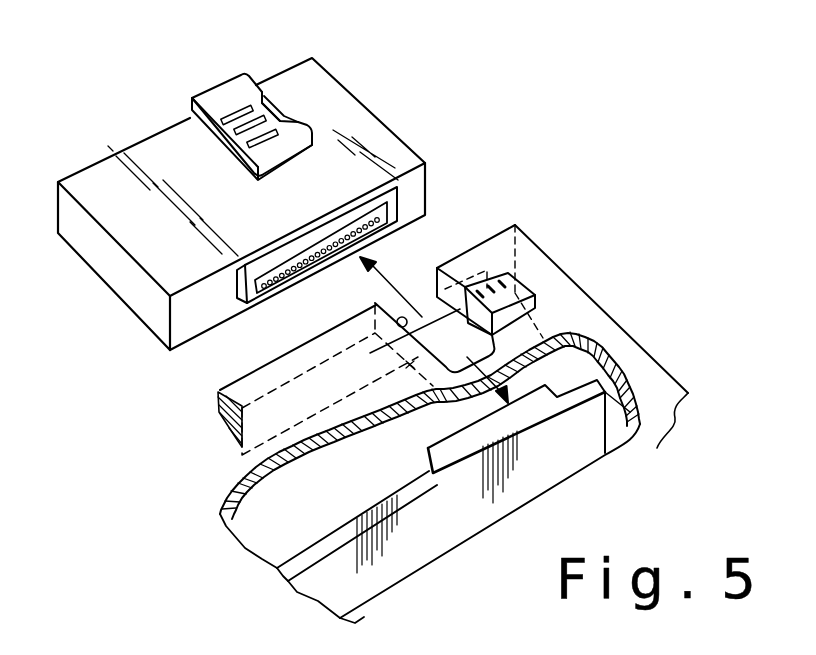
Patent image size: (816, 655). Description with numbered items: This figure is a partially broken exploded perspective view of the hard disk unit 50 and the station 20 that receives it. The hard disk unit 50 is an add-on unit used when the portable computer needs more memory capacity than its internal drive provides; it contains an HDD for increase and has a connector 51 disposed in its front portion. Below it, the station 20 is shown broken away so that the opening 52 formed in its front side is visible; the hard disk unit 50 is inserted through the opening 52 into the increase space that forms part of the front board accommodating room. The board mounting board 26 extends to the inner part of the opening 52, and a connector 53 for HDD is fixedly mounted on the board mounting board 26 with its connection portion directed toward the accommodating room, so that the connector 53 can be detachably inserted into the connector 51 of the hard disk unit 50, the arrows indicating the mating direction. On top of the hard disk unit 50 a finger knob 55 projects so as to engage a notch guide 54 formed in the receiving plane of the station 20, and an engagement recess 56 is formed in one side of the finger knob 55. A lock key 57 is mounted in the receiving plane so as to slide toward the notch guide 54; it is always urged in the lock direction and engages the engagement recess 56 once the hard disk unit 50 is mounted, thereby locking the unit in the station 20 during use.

The station 20 is at (570, 296).
The board mounting board 26 is at (352, 531).
The hard disk unit 50 is at (360, 118).
The connector 51 is at (417, 203).
The opening 52 is at (322, 369).
The connector for HDD 53 is at (450, 443).
The notch guide 54 is at (390, 336).
The finger knob 55 is at (225, 93).
The engagement recess 56 is at (278, 104).
The lock key 57 is at (499, 280).